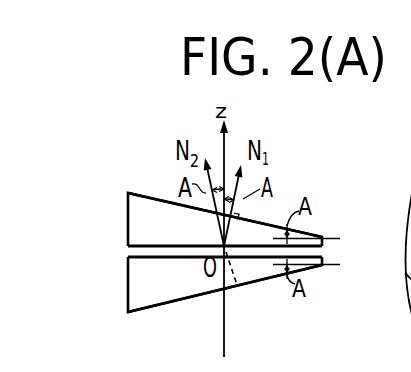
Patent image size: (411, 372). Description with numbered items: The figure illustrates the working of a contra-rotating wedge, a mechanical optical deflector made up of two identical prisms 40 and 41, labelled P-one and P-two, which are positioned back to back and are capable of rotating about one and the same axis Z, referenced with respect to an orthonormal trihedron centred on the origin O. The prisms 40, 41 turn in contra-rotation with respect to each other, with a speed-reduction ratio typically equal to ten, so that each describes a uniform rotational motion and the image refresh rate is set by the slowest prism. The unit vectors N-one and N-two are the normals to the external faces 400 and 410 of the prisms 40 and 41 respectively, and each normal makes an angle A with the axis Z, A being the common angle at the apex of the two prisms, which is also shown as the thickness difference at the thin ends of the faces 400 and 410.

The prism 40 is at (128, 216).
The prism 41 is at (128, 283).
The external face 400 is at (145, 197).
The external face 410 is at (158, 305).